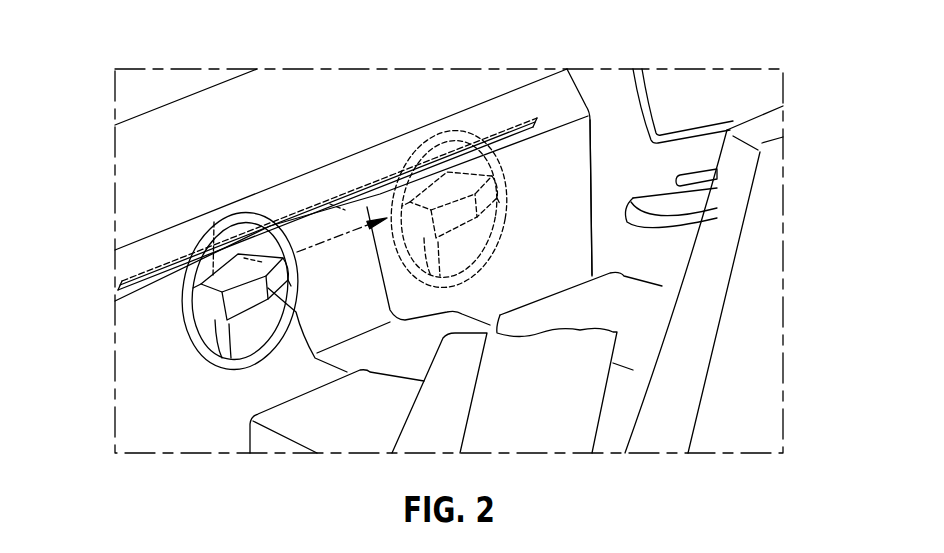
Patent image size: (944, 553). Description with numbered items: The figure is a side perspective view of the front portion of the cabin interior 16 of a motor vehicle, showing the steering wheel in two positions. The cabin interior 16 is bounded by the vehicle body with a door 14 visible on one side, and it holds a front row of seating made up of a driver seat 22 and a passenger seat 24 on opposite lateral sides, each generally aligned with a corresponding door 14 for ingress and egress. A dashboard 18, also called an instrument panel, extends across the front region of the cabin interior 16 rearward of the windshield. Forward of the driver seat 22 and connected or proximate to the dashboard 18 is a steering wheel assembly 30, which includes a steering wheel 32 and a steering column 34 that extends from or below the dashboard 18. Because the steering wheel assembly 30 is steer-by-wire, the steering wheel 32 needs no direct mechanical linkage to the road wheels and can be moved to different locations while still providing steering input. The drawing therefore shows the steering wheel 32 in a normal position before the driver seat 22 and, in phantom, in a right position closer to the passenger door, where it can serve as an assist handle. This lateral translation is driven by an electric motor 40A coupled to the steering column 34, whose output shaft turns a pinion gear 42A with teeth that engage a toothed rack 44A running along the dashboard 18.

The door 14 is at (707, 130).
The cabin interior 16 is at (567, 178).
The dashboard 18 is at (143, 167).
The driver seat 22 is at (323, 432).
The passenger seat 24 is at (623, 302).
The steering wheel assembly 30 is at (170, 239).
The steering wheel 32 is at (200, 357).
The steering column 34 is at (173, 292).
The electric motor 40A is at (257, 228).
The pinion gear 42A is at (226, 205).
The toothed rack 44A is at (338, 200).